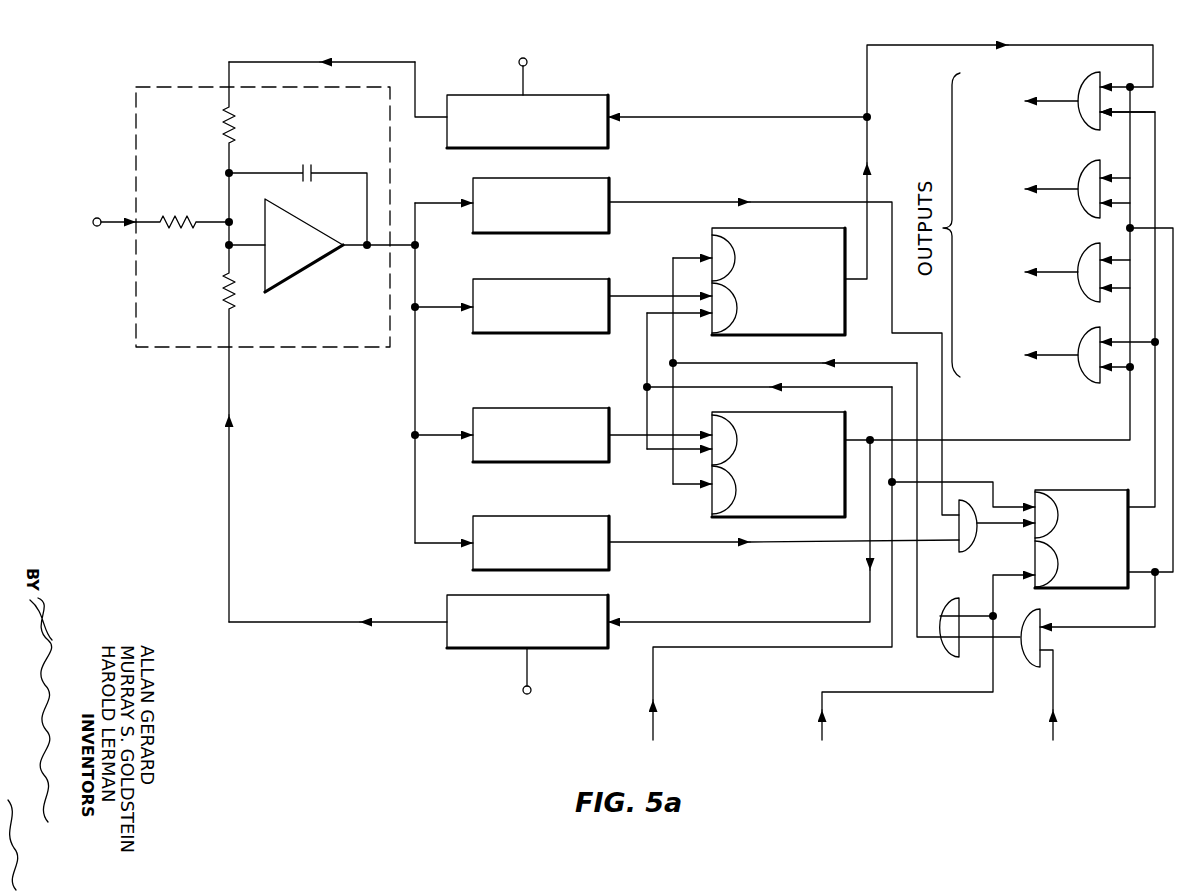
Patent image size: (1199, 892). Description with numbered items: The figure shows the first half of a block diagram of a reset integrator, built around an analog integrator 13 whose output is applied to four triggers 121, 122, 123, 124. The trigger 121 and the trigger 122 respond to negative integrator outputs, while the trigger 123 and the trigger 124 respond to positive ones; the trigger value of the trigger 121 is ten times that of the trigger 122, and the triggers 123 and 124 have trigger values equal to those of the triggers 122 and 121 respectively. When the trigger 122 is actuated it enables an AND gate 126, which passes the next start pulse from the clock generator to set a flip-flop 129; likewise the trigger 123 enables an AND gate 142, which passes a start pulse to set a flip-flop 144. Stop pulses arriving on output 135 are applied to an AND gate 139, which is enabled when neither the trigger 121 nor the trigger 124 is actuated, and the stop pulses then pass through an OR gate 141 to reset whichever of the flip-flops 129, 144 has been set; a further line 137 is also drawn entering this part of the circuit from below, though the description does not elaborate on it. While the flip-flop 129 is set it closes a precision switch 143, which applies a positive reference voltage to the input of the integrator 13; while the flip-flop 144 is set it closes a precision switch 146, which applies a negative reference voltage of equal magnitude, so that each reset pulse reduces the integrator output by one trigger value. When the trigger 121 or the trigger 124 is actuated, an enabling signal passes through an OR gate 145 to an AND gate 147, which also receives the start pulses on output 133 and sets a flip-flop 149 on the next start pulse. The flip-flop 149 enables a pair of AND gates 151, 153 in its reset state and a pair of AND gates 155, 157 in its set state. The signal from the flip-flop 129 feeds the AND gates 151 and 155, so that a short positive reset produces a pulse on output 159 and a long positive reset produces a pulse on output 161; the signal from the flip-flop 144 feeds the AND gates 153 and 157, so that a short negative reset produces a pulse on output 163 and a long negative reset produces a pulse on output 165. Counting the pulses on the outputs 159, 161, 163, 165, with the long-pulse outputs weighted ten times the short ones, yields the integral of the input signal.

The analog integrator 13 is at (188, 97).
The precision switch 143 is at (462, 97).
The trigger 121 is at (612, 190).
The trigger 122 is at (614, 290).
The trigger 123 is at (582, 413).
The trigger 124 is at (594, 522).
The AND gate 126 is at (725, 322).
The flip-flop 129 is at (833, 323).
The AND gate 142 is at (719, 419).
The flip-flop 144 is at (828, 418).
The precision switch 146 is at (458, 598).
The output 133 is at (656, 681).
The reset line 137 is at (893, 694).
The OR gate 141 is at (952, 646).
The AND gate 139 is at (1036, 656).
The output 135 is at (1056, 690).
The OR gate 145 is at (966, 556).
The AND gate 147 is at (1043, 495).
The flip-flop 149 is at (1104, 589).
The AND gate 155 is at (1088, 82).
The output 161 is at (1056, 103).
The AND gate 151 is at (1087, 173).
The output 159 is at (1056, 192).
The AND gate 153 is at (1087, 257).
The output 163 is at (1056, 275).
The AND gate 157 is at (1087, 342).
The output 165 is at (1056, 362).